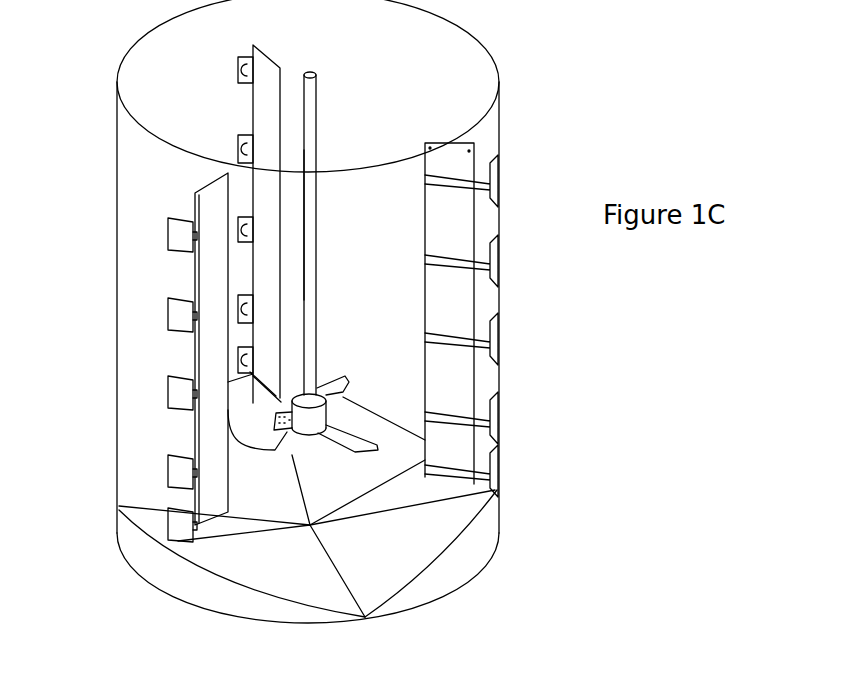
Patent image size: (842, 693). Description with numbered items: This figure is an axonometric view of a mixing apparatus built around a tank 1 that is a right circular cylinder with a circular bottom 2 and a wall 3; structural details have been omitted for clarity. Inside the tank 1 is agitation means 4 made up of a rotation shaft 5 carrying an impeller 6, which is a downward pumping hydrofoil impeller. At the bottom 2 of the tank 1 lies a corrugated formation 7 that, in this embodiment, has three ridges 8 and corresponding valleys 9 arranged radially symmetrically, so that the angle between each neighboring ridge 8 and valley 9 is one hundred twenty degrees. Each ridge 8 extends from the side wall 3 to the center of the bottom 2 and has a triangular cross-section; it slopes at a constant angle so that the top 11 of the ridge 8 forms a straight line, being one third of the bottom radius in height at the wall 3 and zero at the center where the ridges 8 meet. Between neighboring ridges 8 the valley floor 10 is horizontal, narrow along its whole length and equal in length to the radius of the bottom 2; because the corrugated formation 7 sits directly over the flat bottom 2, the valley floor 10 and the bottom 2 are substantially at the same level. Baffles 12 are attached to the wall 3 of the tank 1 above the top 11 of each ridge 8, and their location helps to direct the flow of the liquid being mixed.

The tank 1 is at (96, 131).
The bottom 2 is at (497, 550).
The wall 3 is at (117, 172).
The agitation means 4 is at (320, 102).
The rotation shaft 5 is at (310, 240).
The impeller 6 is at (345, 378).
The corrugated formation 7 is at (150, 478).
The ridge 8 is at (210, 547).
The valley 9 is at (395, 580).
The valley floor 10 is at (343, 573).
The top of the ridge 11 is at (405, 497).
The baffle 12 is at (462, 226).